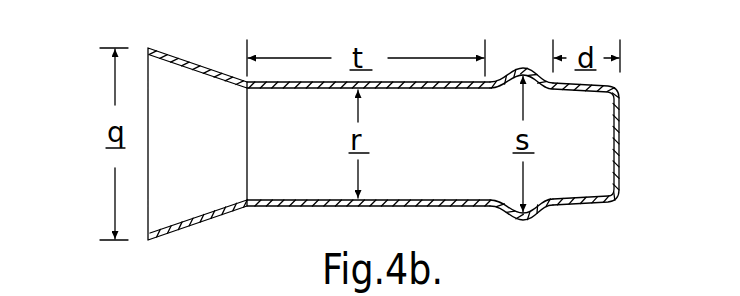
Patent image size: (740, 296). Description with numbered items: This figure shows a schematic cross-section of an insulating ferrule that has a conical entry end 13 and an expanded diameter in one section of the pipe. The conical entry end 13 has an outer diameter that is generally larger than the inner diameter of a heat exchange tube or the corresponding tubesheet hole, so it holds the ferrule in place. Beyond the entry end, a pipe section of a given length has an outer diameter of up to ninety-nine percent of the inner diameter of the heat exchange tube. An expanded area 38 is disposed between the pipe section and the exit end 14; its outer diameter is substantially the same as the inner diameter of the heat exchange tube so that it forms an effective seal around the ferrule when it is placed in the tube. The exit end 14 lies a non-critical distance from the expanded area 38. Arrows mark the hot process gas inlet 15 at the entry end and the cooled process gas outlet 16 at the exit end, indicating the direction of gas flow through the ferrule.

The entry end 13 is at (149, 47).
The exit end 14 is at (618, 195).
The hot process gas inlet 15 is at (98, 144).
The cooled process gas outlet 16 is at (635, 144).
The expanded area 38 is at (513, 219).